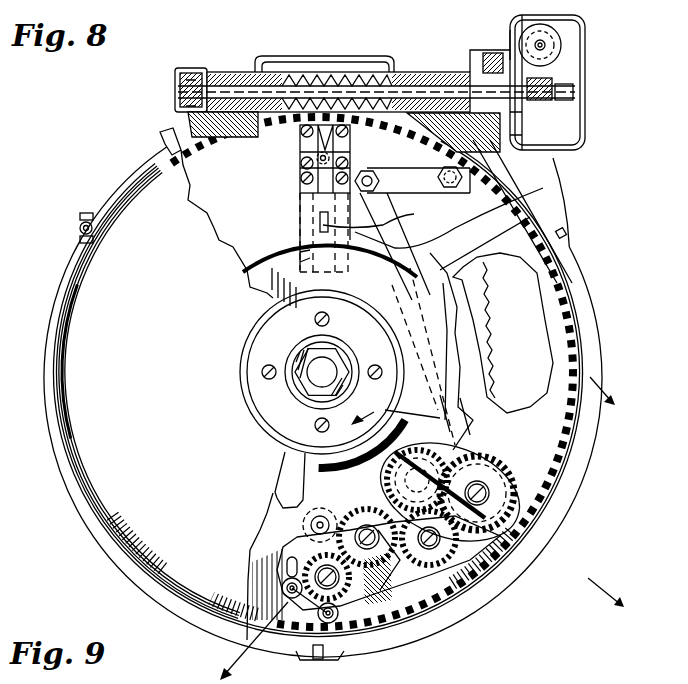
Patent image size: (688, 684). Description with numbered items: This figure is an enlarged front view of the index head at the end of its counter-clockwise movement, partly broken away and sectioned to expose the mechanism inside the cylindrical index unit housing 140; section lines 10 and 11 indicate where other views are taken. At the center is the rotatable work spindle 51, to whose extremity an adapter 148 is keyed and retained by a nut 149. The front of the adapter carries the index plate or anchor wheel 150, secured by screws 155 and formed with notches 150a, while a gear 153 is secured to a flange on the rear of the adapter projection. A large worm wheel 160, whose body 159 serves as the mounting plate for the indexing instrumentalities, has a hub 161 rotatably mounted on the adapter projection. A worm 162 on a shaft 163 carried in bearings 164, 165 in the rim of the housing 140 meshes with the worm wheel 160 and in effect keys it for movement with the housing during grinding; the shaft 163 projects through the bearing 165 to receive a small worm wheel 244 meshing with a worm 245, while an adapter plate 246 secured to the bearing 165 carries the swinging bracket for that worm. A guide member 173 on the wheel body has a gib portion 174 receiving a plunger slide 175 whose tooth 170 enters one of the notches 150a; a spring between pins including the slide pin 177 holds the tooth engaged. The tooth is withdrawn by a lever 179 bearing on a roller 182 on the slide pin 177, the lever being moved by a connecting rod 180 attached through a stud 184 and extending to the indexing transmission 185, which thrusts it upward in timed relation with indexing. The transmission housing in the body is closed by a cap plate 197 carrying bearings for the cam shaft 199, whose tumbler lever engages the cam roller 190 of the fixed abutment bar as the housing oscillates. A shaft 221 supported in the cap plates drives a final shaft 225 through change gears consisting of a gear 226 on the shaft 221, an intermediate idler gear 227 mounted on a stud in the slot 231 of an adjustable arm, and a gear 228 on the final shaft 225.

The section line 10- 10 is at (422, 546).
The section line 11- 11 is at (635, 405).
The work spindle 51 is at (310, 376).
The index unit housing 140 is at (592, 300).
The adapter 148 is at (292, 354).
The nut 149 is at (308, 374).
The index plate or anchor wheel 150 is at (530, 217).
The notches 150a is at (485, 258).
The gear 153 is at (486, 342).
The screws 155 is at (314, 322).
The worm wheel body 159 is at (518, 437).
The worm wheel 160 is at (580, 352).
The hub 161 is at (325, 395).
The worm 162 is at (345, 76).
The worm shaft 163 is at (405, 92).
The bearing 164 is at (247, 72).
The bearing 165 is at (460, 57).
The tooth 170 is at (383, 246).
The guide member 173 is at (300, 144).
The gib portion 174 is at (318, 200).
The plunger slide 175 is at (328, 222).
The pin 177 is at (300, 168).
The lever 179 is at (505, 166).
The connecting rod 180 is at (543, 188).
The roller 182 is at (338, 148).
The stud 184 is at (392, 170).
The indexing transmission 185 is at (525, 450).
The cam roller 190 is at (302, 525).
The cap plate 197 is at (523, 477).
The cam shaft 199 is at (497, 510).
The shaft 221 is at (508, 567).
The final shaft 225 is at (287, 635).
The gear 226 is at (473, 543).
The intermediate idler gear 227 is at (438, 620).
The gear 228 is at (368, 628).
The slot 231 is at (406, 627).
The small worm wheel 244 is at (580, 140).
The worm 245 is at (565, 46).
The adapter plate 246 is at (512, 22).